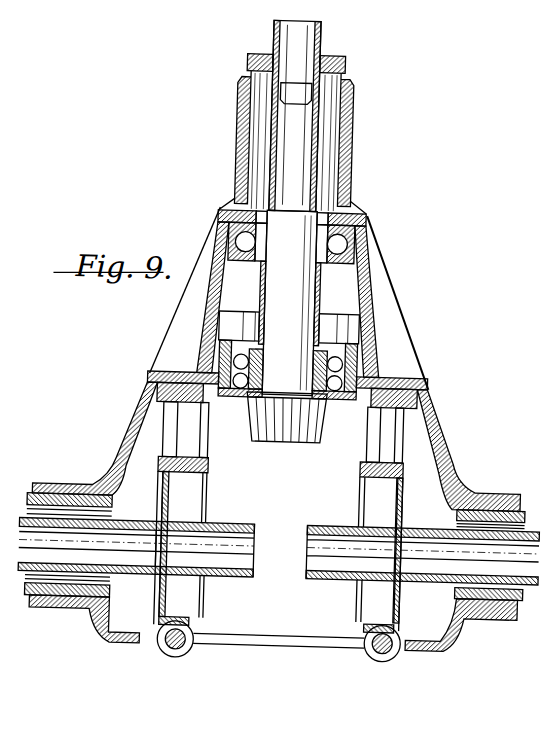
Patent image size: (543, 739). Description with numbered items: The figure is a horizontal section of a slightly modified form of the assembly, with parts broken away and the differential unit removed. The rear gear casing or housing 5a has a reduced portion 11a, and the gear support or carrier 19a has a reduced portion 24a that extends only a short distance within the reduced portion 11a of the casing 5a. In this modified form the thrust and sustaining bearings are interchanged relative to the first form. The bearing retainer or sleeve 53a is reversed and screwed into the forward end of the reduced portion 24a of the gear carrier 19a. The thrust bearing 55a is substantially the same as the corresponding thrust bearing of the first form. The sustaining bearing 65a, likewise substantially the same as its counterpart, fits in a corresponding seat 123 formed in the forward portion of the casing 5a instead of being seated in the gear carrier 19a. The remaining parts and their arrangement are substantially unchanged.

The sustaining bearing 65a is at (348, 224).
The seat 123 is at (358, 244).
The reduced portion of the rear gear casing 11a is at (368, 290).
The bearing retainer or sleeve 53a is at (358, 324).
The reduced portion of the gear carrier 24a is at (377, 348).
The thrust bearing 55a is at (386, 364).
The gear support or carrier 19a is at (412, 385).
The rear gear casing or housing 5a is at (448, 434).